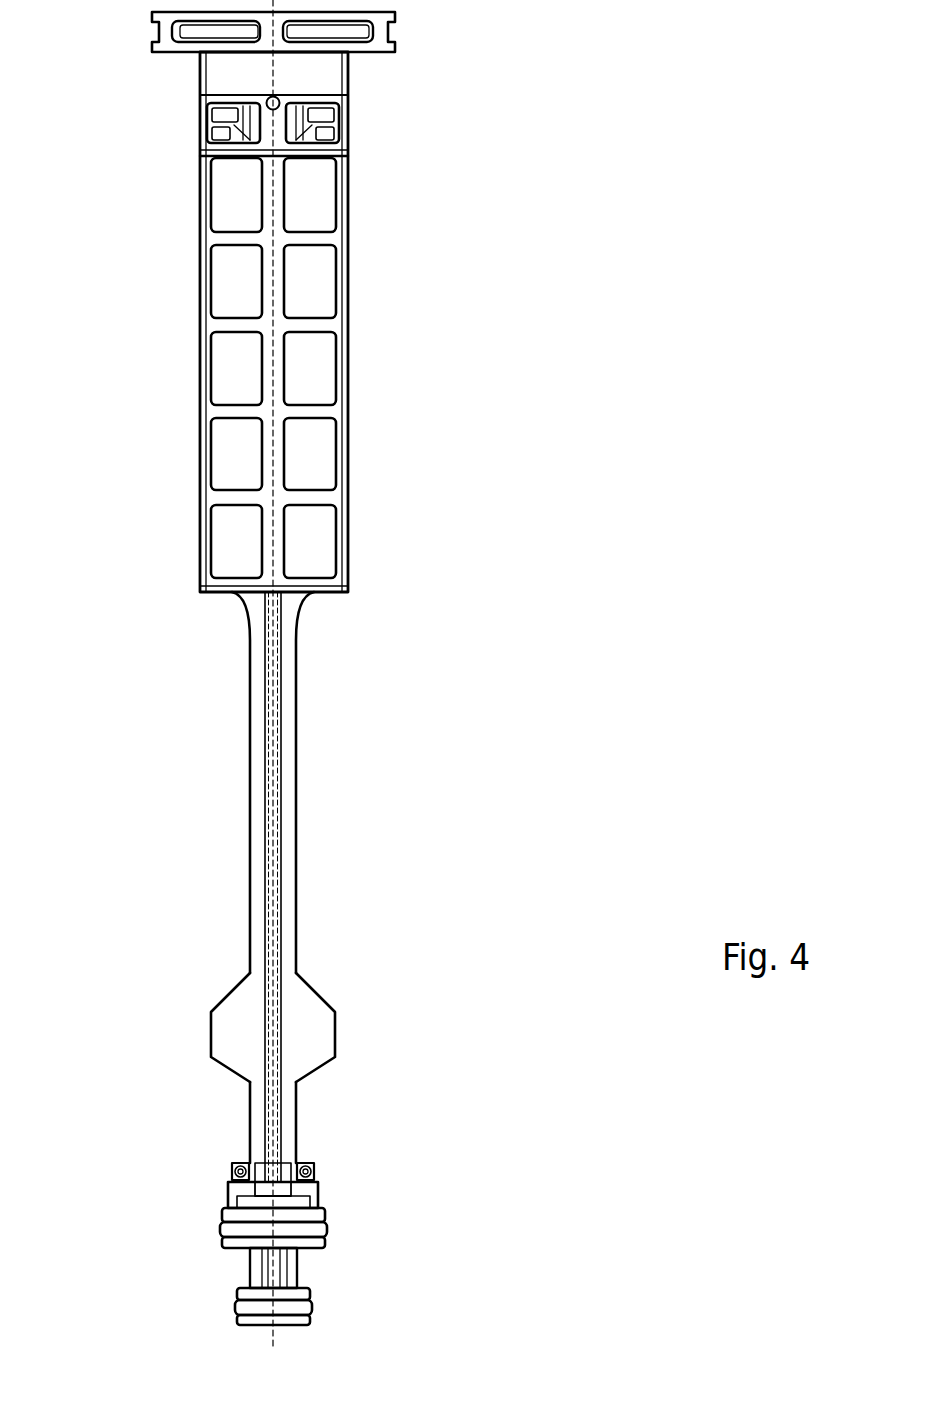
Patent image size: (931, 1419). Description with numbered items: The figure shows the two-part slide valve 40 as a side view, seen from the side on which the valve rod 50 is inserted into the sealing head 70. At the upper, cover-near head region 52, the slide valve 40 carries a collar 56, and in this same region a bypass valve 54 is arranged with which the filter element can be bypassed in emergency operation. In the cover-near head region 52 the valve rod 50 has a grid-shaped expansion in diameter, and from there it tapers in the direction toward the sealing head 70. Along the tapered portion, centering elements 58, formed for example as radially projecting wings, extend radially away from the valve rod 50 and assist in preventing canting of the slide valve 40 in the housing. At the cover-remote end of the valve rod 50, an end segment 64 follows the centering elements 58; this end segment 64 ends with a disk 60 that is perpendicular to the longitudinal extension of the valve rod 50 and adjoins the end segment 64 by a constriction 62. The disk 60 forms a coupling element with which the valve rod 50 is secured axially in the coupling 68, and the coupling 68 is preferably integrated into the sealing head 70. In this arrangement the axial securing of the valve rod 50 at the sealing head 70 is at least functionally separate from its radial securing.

The slide valve 40 is at (137, 364).
The valve rod 50 is at (353, 576).
The cover-near head region 52 is at (347, 336).
The bypass valve 54 is at (338, 136).
The collar 56 is at (393, 42).
The centering elements 58 is at (336, 1034).
The disk 60 is at (302, 1190).
The constriction 62 is at (232, 1168).
The end segment 64 is at (317, 1150).
The coupling 68 is at (229, 1133).
The sealing head 70 is at (342, 1245).